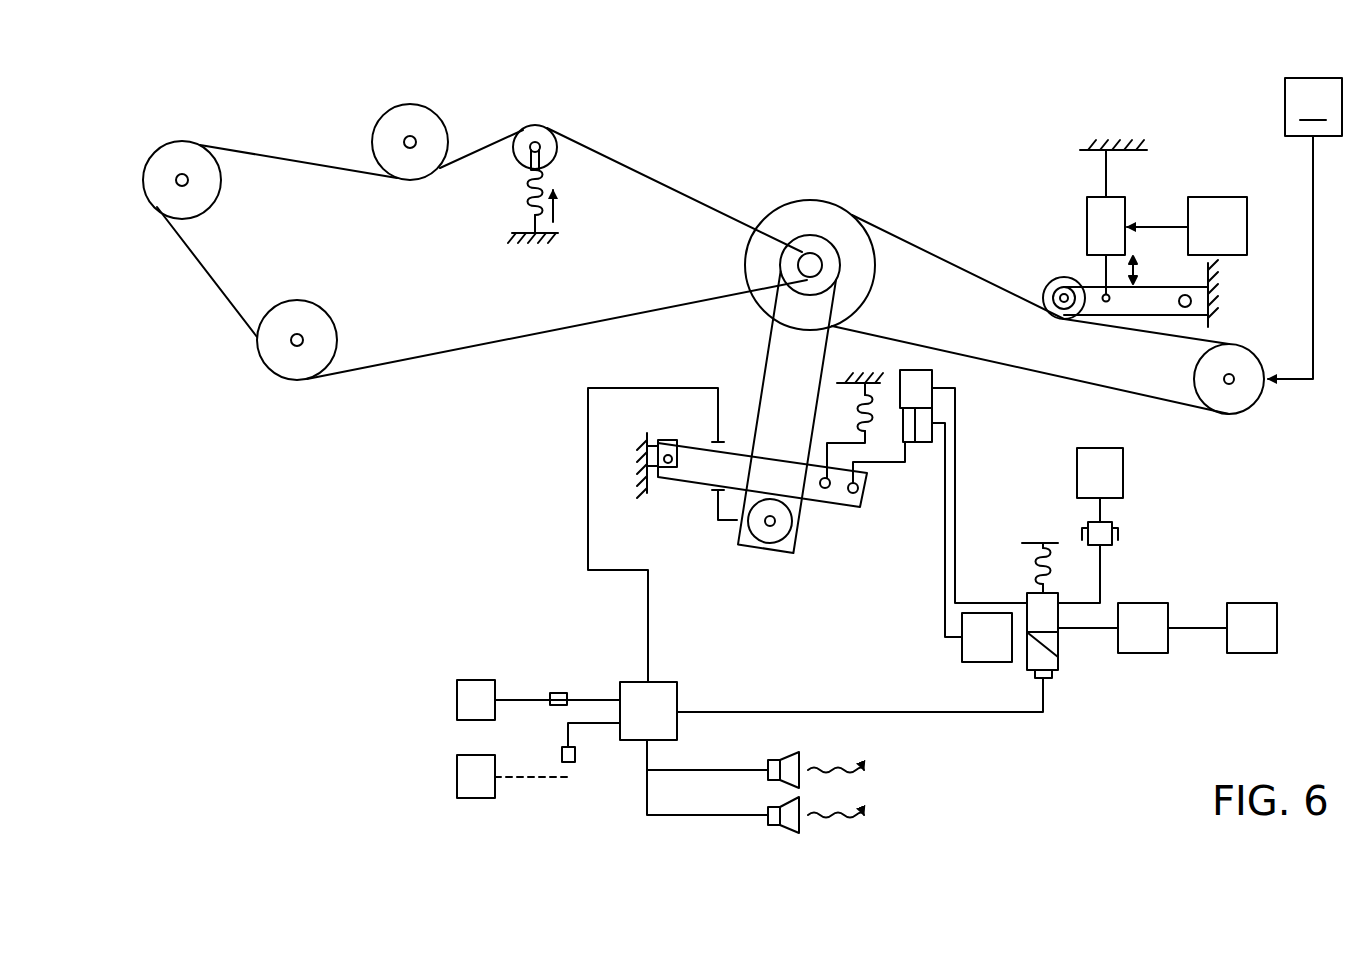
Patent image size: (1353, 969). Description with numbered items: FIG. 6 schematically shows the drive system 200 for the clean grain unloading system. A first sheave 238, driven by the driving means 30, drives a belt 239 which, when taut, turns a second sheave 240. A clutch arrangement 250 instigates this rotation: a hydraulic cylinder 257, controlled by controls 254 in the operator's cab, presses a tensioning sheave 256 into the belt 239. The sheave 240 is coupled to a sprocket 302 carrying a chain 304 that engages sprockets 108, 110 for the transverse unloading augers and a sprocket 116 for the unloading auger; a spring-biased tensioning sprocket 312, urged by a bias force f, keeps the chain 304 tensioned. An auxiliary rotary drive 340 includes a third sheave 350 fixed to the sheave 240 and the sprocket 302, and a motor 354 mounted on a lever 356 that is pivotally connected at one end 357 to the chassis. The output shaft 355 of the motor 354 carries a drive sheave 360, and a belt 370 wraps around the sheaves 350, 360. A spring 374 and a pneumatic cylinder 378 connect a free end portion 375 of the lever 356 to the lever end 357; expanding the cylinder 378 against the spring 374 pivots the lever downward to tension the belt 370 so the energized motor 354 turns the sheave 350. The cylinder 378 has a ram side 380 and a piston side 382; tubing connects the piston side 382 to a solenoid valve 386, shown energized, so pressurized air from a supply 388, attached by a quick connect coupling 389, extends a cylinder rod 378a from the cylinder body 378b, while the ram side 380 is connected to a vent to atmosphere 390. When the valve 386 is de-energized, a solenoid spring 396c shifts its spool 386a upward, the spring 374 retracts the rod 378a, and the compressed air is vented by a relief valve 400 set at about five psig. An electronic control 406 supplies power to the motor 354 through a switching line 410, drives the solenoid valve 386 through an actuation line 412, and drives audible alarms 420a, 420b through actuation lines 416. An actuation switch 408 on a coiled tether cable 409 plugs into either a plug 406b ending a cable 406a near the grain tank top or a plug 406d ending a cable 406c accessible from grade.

The drive system 200 is at (746, 78).
The sprocket 108 is at (168, 146).
The sprocket 110 is at (394, 107).
The sprocket 116 is at (318, 303).
The sprocket 302 is at (793, 258).
The chain 304 is at (632, 165).
The tensioning sprocket 312 is at (520, 168).
The force f is at (561, 206).
The second sheave 240 is at (805, 200).
The third sheave 350 is at (838, 238).
The clutch arrangement 250 is at (1026, 200).
The controls 254 is at (1218, 195).
The hydraulic cylinder 257 is at (1086, 222).
The tensioning sheave 256 is at (1056, 278).
The first sheave 238 is at (1236, 344).
The belt 239 is at (1130, 398).
The driving means 30 is at (1305, 228).
The auxiliary rotary drive 340 is at (580, 417).
The switching line 410 is at (586, 466).
The belt 370 is at (764, 362).
The drive sheave 360 is at (757, 546).
The output shaft 355 is at (763, 524).
The motor 354 is at (780, 560).
The free end portion 375 is at (838, 512).
The lever 356 is at (696, 486).
The lever end 357 is at (670, 446).
The spring 374 is at (835, 430).
The pneumatic cylinder 378 is at (917, 366).
The cylinder rod 378a is at (905, 468).
The cylinder body 378b is at (898, 376).
The piston side 382 is at (950, 384).
The ram side 380 is at (925, 447).
The solenoid valve 386 is at (1062, 664).
The spool 386a is at (1026, 598).
The spring seat 396c is at (1036, 540).
The actuation line 412 is at (898, 713).
The air supply 388 is at (1125, 473).
The quick connect coupling 389 is at (1124, 525).
The relief valve 400 is at (1146, 602).
The vent to atmosphere 390 is at (1258, 602).
The electronic control 406 is at (630, 678).
The cable 406a is at (594, 698).
The plug 406b is at (554, 690).
The cable 406c is at (588, 725).
The plug 406d is at (578, 764).
The actuation switch 408 is at (454, 700).
The tether cable 409 is at (535, 697).
The actuation lines 416 is at (693, 775).
The audible alarm 420a is at (782, 752).
The audible alarm 420b is at (785, 830).